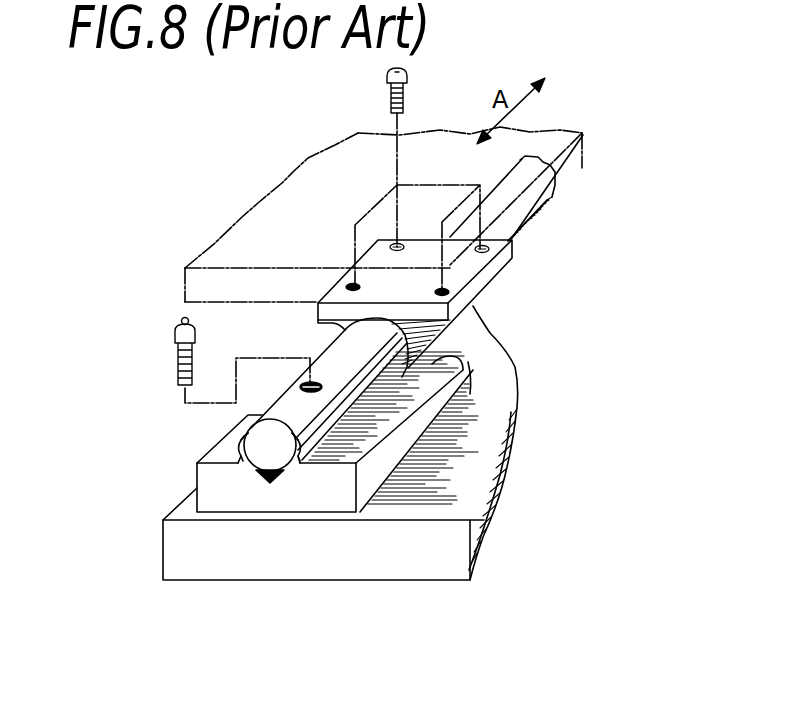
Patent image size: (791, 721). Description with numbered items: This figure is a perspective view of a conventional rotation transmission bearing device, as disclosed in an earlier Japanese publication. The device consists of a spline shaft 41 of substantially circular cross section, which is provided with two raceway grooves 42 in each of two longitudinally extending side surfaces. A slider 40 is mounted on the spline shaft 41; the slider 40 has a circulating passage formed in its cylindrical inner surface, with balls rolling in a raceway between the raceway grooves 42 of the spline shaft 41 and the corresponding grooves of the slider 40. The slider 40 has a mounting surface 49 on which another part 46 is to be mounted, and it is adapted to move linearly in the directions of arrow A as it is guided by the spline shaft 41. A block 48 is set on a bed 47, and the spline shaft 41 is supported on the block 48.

The slider 40 is at (440, 336).
The spline shaft 41 is at (358, 357).
The raceway grooves 42 is at (243, 438).
The another part 46 is at (278, 200).
The bed 47 is at (402, 563).
The block 48 is at (440, 407).
The mounting surface 49 is at (470, 268).